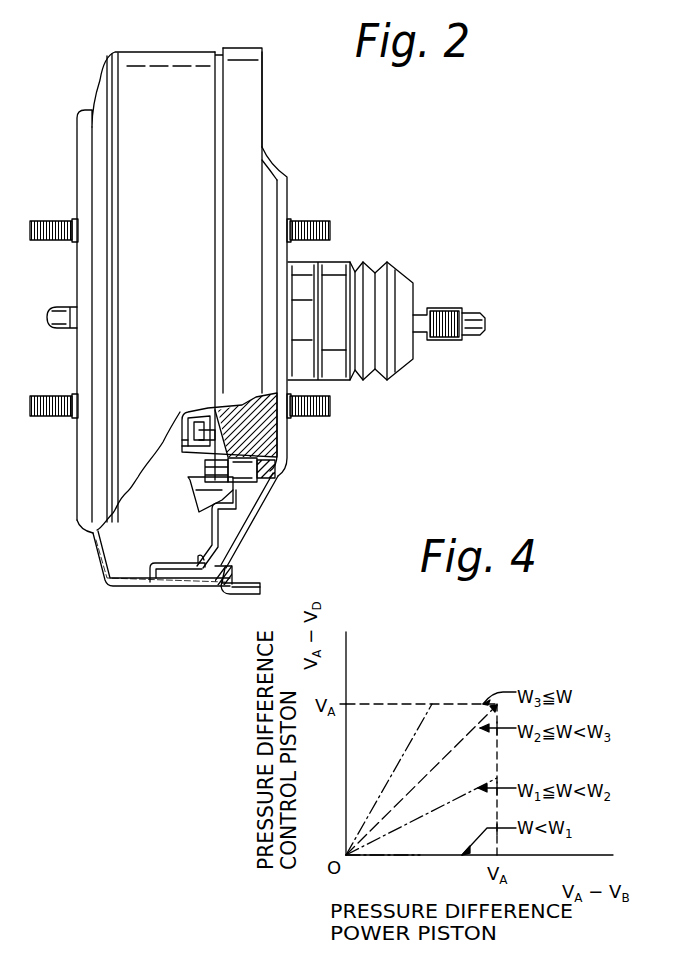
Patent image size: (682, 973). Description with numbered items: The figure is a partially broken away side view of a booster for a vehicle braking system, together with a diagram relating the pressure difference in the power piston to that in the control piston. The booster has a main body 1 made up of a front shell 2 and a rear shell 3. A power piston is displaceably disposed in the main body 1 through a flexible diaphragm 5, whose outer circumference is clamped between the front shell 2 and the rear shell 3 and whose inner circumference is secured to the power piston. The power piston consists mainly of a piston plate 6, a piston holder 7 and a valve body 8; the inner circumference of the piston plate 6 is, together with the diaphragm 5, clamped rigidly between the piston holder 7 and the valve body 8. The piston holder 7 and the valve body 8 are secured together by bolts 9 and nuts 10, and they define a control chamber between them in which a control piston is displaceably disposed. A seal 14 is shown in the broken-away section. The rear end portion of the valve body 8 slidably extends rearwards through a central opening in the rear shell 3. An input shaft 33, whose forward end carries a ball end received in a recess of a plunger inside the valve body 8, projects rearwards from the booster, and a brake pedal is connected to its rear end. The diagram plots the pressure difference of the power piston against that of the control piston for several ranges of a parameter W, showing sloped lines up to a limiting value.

The main body 1 is at (180, 50).
The front shell 2 is at (96, 100).
The rear shell 3 is at (290, 192).
The flexible diaphragm 5 is at (165, 563).
The piston plate 6 is at (210, 532).
The piston holder 7 is at (187, 438).
The valve body 8 is at (263, 442).
The bolts 9 is at (270, 480).
The nuts 10 is at (192, 485).
The seal 14 is at (238, 406).
The input shaft 33 is at (446, 308).